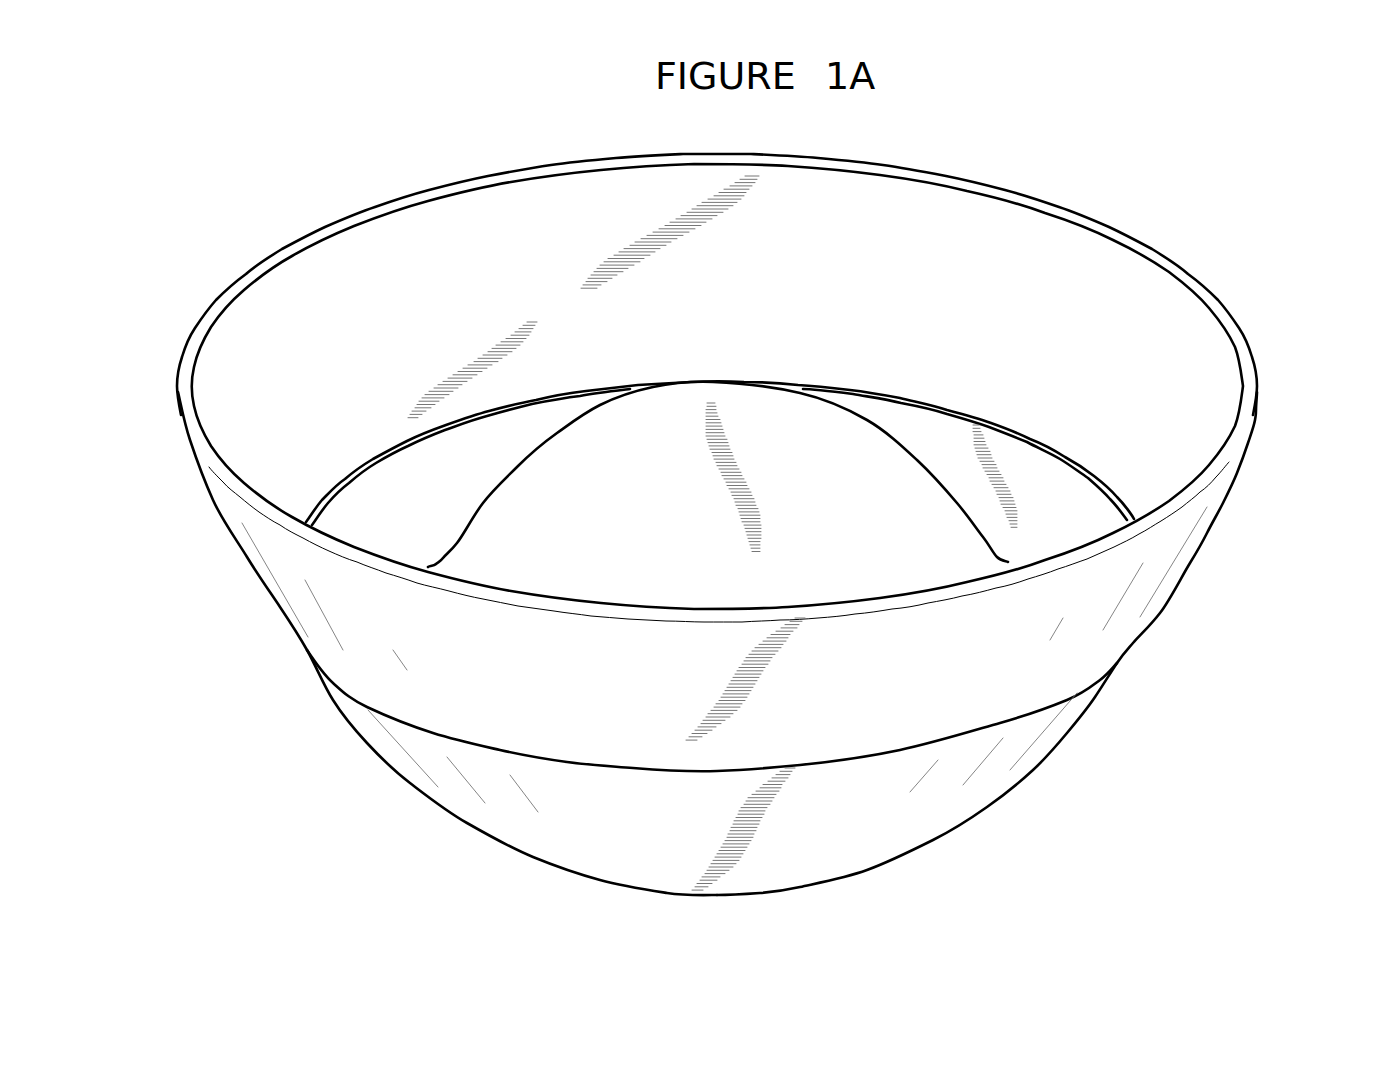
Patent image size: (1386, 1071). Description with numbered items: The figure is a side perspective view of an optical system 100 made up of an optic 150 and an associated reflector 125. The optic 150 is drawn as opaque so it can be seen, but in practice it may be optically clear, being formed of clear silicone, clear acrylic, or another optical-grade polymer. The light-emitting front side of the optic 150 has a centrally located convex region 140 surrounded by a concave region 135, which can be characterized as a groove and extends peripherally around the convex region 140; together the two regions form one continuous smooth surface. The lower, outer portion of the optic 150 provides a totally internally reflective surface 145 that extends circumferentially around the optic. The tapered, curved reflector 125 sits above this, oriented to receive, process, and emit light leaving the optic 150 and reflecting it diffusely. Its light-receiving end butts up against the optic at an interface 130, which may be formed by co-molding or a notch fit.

The optical system 100 is at (1170, 108).
The reflector 125 is at (1250, 518).
The interface 130 is at (1149, 674).
The concave region 135 is at (406, 470).
The convex region 140 is at (675, 402).
The totally internally reflective surface 145 is at (983, 788).
The optic 150 is at (1108, 744).